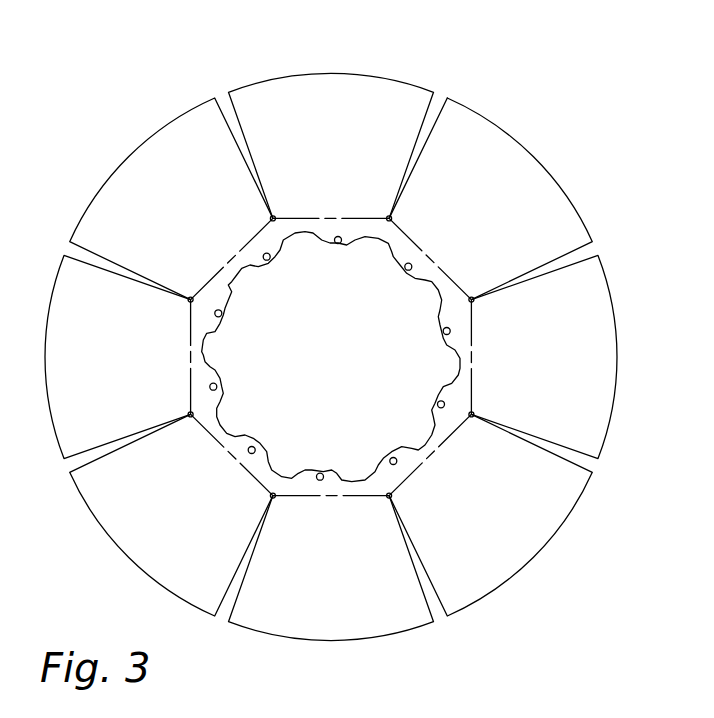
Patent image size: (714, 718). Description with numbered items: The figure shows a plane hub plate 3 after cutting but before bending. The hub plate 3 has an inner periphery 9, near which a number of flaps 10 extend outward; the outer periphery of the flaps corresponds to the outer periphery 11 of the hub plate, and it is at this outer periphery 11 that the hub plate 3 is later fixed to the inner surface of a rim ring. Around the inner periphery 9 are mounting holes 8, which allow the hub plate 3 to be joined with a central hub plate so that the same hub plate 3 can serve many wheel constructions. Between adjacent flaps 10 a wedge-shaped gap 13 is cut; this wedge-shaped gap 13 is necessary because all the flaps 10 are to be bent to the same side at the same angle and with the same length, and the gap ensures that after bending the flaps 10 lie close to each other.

The hub plate 3 is at (105, 123).
The mounting holes 8 is at (338, 244).
The inner periphery 9 is at (233, 280).
The flaps 10 is at (330, 163).
The outer periphery 11 is at (545, 163).
The wedge-shaped gap 13 is at (433, 107).